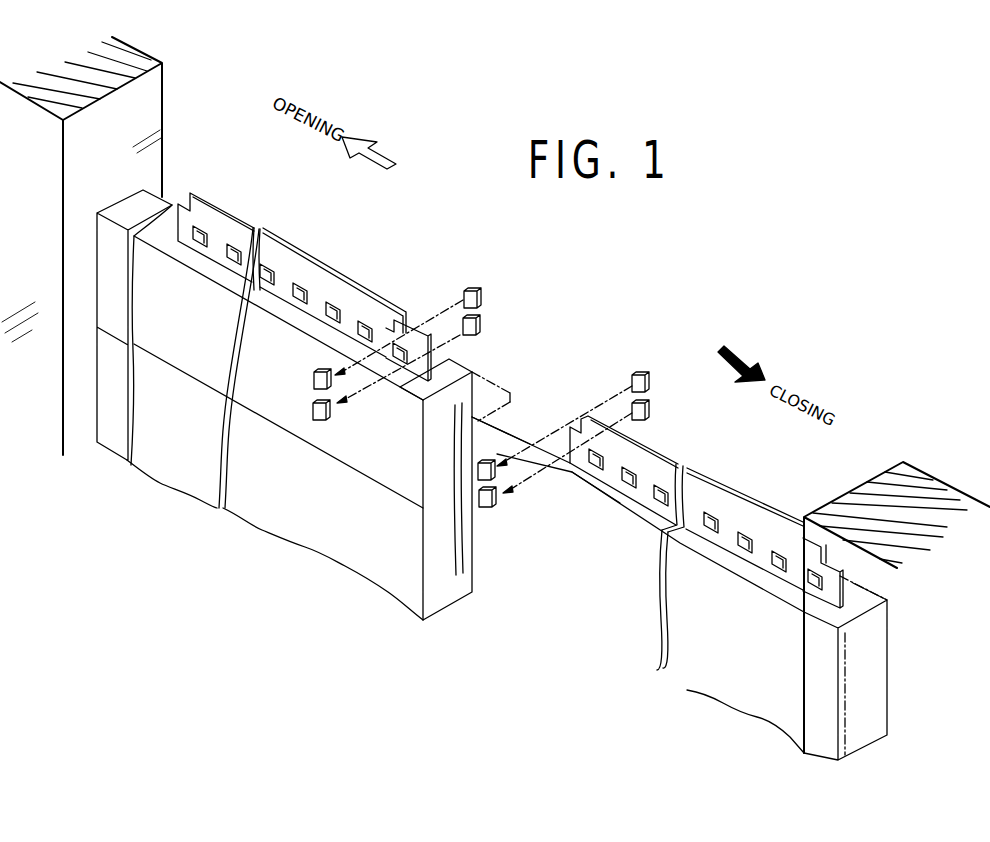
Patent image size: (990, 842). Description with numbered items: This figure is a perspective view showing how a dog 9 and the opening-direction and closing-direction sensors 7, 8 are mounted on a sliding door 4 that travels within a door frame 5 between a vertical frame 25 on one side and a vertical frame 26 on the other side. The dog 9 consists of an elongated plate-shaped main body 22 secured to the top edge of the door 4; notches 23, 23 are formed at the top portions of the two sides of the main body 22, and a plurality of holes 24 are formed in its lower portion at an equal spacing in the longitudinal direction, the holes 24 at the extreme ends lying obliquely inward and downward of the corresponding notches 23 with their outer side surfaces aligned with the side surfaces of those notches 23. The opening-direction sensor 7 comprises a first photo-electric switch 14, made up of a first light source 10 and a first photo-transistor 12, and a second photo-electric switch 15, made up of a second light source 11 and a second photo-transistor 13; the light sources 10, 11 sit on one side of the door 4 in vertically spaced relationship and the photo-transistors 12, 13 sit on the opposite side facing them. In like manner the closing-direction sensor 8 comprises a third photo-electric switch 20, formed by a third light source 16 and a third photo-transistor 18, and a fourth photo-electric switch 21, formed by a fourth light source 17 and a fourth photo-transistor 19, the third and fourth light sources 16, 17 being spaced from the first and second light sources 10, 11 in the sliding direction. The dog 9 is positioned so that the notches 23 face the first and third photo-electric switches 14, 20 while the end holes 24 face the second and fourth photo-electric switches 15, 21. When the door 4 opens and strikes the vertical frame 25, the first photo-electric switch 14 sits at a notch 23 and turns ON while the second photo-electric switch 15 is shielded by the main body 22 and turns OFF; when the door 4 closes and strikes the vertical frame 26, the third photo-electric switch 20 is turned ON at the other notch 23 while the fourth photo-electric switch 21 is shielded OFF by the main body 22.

The door 4 is at (284, 418).
The door frame 5 is at (938, 490).
The opening-direction sensor 7 is at (493, 284).
The closing-direction sensor 8 is at (660, 382).
The dog 9 is at (507, 386).
The first light source 10 is at (480, 299).
The second light source 11 is at (481, 330).
The first photo-transistor 12 is at (313, 379).
The second photo-transistor 13 is at (328, 420).
The first photo-electric switch 14 is at (450, 281).
The second photo-electric switch 15 is at (500, 370).
The third light source 16 is at (649, 387).
The fourth light source 17 is at (649, 414).
The third photo-transistor 18 is at (480, 463).
The fourth photo-transistor 19 is at (493, 510).
The third photo-electric switch 20 is at (616, 392).
The fourth photo-electric switch 21 is at (628, 425).
The main body 22 is at (354, 291).
The notches 23 is at (192, 196).
The holes 24 is at (200, 246).
The vertical frame 25 is at (163, 99).
The vertical frame 26 is at (866, 493).